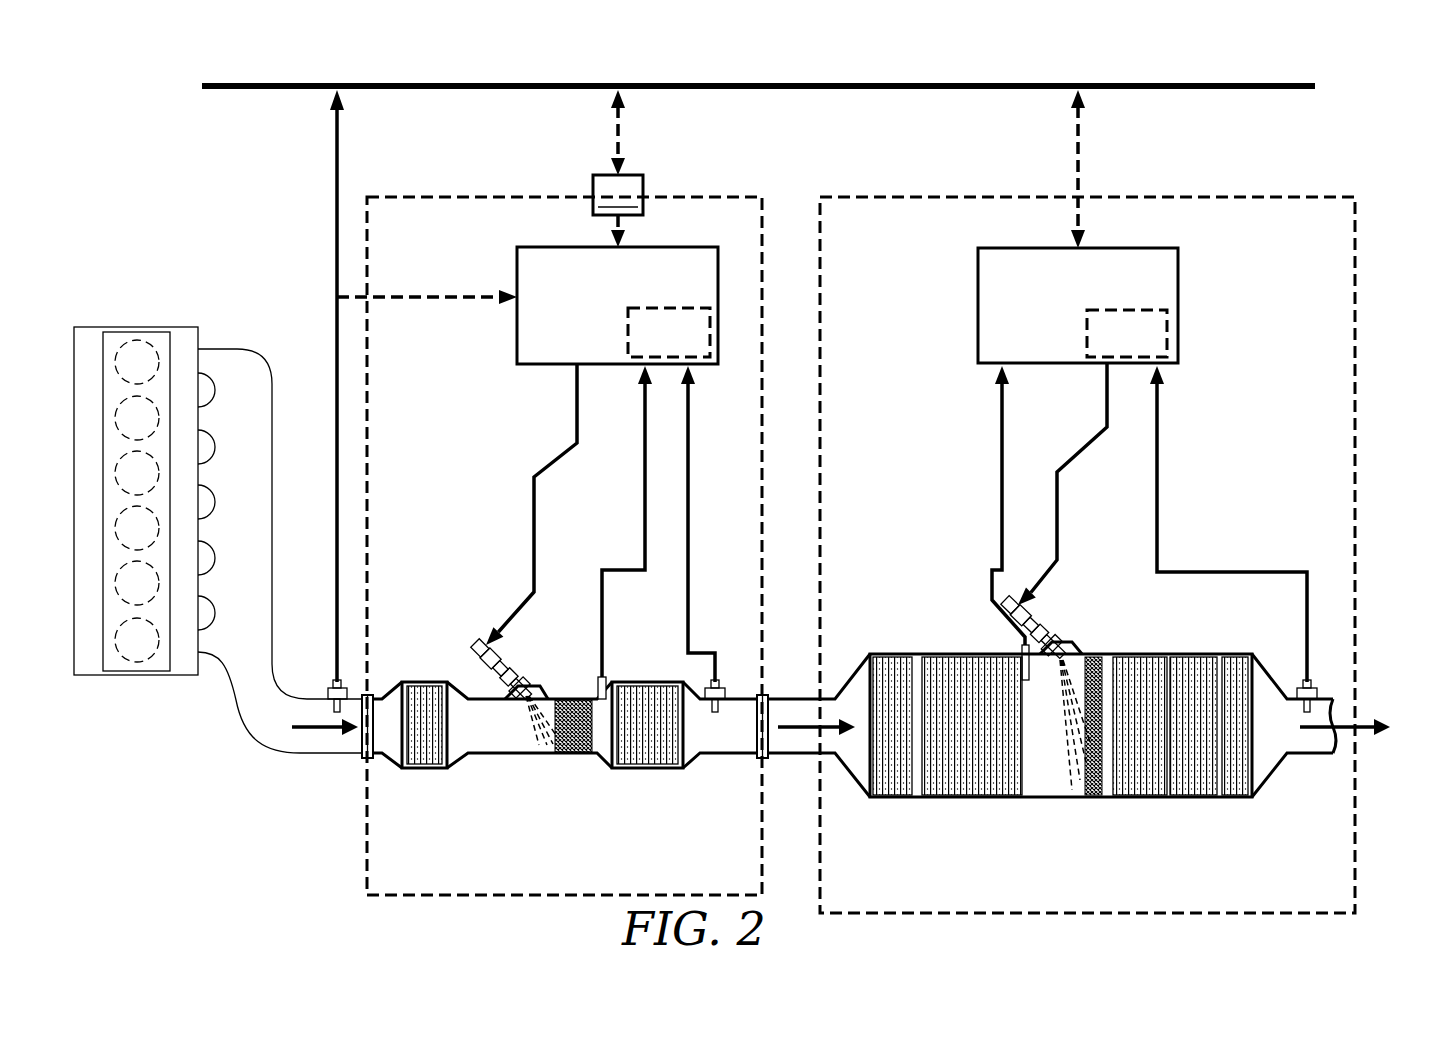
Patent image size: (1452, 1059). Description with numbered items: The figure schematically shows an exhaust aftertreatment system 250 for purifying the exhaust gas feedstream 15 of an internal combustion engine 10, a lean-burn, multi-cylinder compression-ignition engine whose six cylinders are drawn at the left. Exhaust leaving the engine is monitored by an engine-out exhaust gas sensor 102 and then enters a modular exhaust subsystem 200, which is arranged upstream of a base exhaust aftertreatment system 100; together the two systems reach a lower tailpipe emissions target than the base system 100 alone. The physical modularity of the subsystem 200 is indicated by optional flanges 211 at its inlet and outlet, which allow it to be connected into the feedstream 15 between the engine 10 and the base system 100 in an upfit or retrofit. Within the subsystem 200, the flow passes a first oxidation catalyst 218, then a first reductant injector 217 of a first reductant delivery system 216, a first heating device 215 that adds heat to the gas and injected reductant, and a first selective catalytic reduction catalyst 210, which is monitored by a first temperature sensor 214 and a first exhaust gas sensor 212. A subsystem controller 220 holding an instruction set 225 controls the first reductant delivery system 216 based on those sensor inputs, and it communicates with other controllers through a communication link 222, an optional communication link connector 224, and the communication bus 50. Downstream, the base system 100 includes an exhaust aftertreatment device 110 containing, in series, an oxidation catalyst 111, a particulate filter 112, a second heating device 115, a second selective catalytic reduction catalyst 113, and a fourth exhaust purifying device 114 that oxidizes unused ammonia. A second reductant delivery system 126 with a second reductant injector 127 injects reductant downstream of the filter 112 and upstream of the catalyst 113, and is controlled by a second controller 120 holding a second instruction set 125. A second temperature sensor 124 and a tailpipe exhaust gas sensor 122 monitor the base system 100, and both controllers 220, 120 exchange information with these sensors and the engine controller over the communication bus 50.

The communication bus 50 is at (265, 91).
The internal combustion engine 10 is at (140, 327).
The exhaust gas feedstream 15 is at (305, 735).
The flanges 211 is at (360, 745).
The engine-out exhaust gas sensor 102 is at (345, 690).
The modular exhaust subsystem 200 is at (712, 197).
The communication link connector 224 is at (618, 152).
The communication link 222 is at (624, 218).
The subsystem controller 220 is at (638, 287).
The instruction set 225 is at (689, 345).
The first reductant delivery system 216 is at (542, 522).
The first reductant injector 217 is at (502, 658).
The first temperature sensor 214 is at (606, 677).
The first exhaust gas sensor 212 is at (722, 688).
The first oxidation catalyst 218 is at (422, 742).
The first heating device 215 is at (572, 737).
The first selective catalytic reduction catalyst 210 is at (645, 738).
The base exhaust aftertreatment system 100 is at (1232, 197).
The exhaust aftertreatment system 250 is at (1132, 501).
The second controller 120 is at (1098, 289).
The second instruction set 125 is at (1147, 345).
The second reductant delivery system 126 is at (1068, 516).
The second reductant injector 127 is at (1030, 620).
The second temperature sensor 124 is at (1020, 652).
The tailpipe exhaust gas sensor 122 is at (1315, 688).
The exhaust aftertreatment device 110 is at (1280, 850).
The oxidation catalyst 111 is at (893, 785).
The particulate filter 112 is at (970, 780).
The second heating device 115 is at (1092, 780).
The second selective catalytic reduction catalyst 113 is at (1195, 780).
The fourth exhaust purifying device 114 is at (1232, 780).